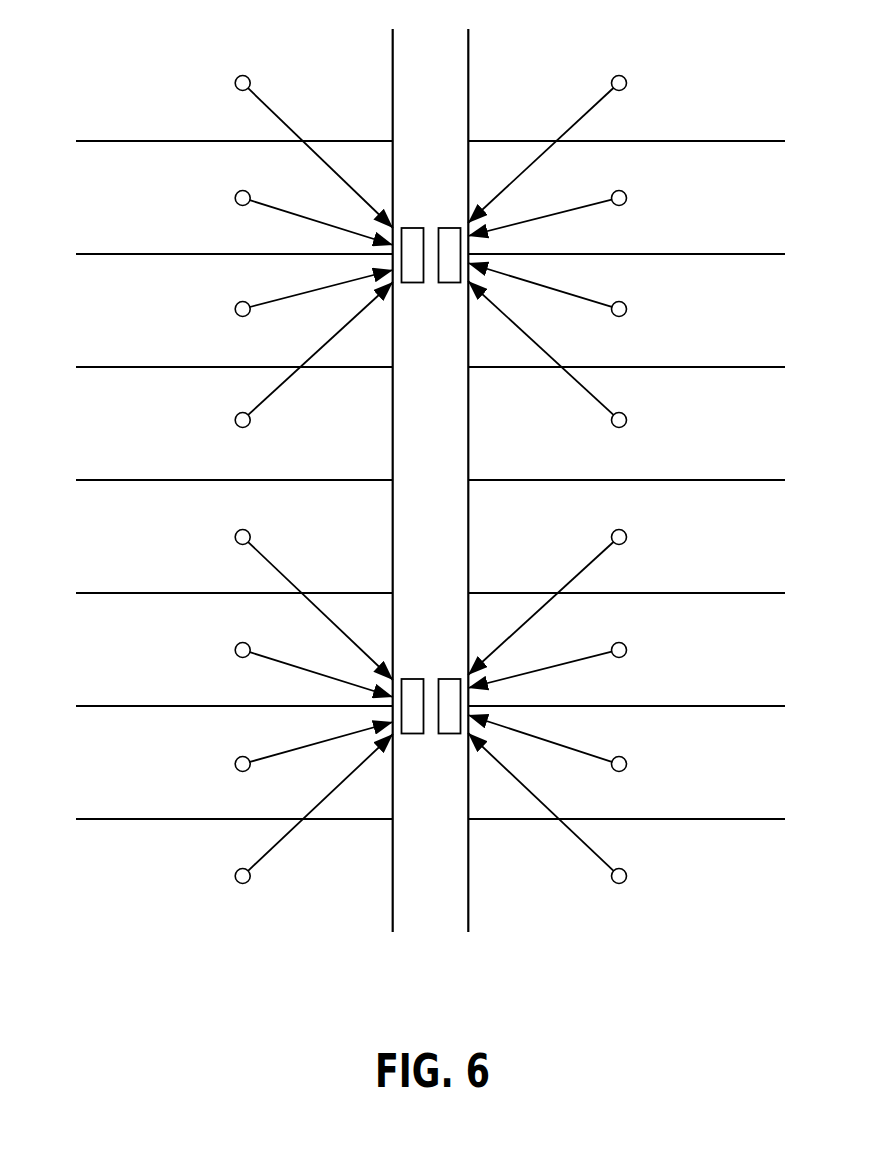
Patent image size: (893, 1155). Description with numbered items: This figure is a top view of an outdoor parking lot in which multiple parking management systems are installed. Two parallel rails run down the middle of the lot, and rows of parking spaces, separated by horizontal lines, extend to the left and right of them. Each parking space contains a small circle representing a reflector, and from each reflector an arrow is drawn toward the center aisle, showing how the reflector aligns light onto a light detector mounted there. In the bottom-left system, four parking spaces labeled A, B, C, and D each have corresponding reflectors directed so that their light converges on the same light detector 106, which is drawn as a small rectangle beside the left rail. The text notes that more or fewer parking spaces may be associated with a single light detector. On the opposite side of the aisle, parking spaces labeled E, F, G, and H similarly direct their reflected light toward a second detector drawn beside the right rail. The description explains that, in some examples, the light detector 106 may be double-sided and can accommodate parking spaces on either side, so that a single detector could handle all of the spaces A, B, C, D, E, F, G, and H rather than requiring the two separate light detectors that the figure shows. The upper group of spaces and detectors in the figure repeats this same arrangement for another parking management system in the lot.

The light detector 106 is at (414, 736).
The parking space A is at (314, 602).
The parking space B is at (314, 666).
The parking space C is at (314, 750).
The parking space D is at (314, 813).
The parking space E is at (547, 811).
The parking space F is at (547, 746).
The parking space G is at (547, 661).
The parking space H is at (547, 599).